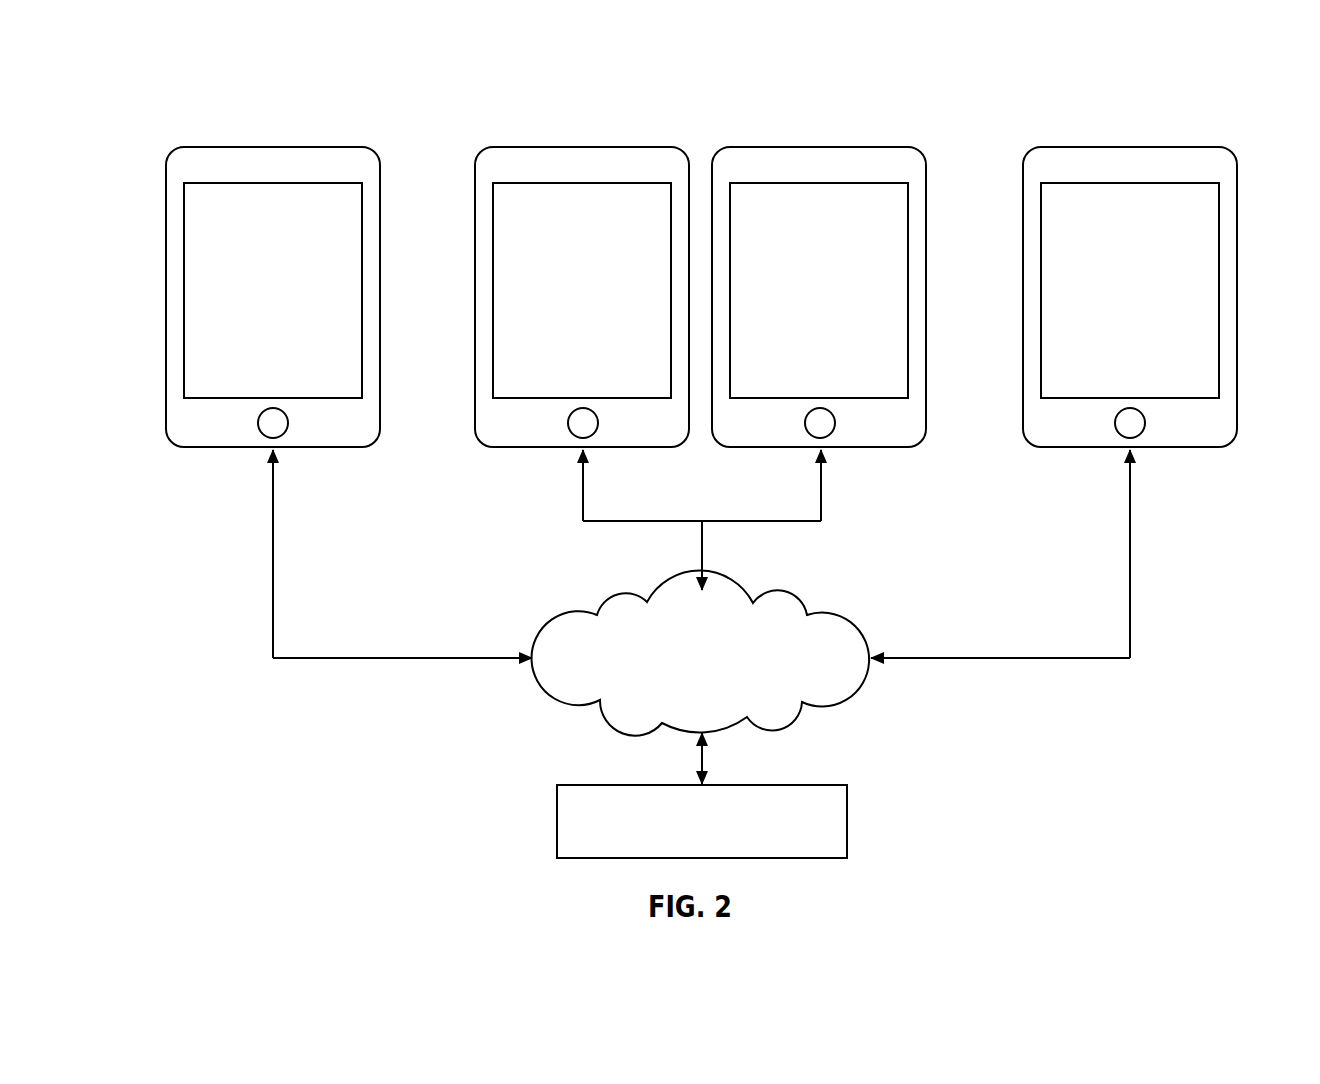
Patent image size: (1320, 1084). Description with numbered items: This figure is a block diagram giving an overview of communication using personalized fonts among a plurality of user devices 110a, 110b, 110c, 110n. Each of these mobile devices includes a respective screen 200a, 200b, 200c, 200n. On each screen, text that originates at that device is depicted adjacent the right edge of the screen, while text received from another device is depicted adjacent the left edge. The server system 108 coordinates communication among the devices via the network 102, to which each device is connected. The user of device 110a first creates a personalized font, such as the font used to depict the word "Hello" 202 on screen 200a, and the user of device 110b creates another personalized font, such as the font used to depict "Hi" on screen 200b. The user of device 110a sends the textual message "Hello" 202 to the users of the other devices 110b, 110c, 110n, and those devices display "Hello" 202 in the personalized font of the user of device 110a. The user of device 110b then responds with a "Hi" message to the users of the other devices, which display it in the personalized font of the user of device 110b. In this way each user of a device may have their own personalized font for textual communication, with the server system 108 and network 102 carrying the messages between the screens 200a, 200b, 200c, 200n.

The user device 110a is at (233, 147).
The user device 110b is at (542, 147).
The user device 110c is at (779, 147).
The user device 110n is at (1089, 147).
The screen 200a is at (308, 190).
The screen 200b is at (633, 190).
The screen 200c is at (853, 190).
The screen 200n is at (1163, 190).
The textual message "Hello" 202 is at (291, 309).
The network 102 is at (786, 600).
The server system 108 is at (557, 822).